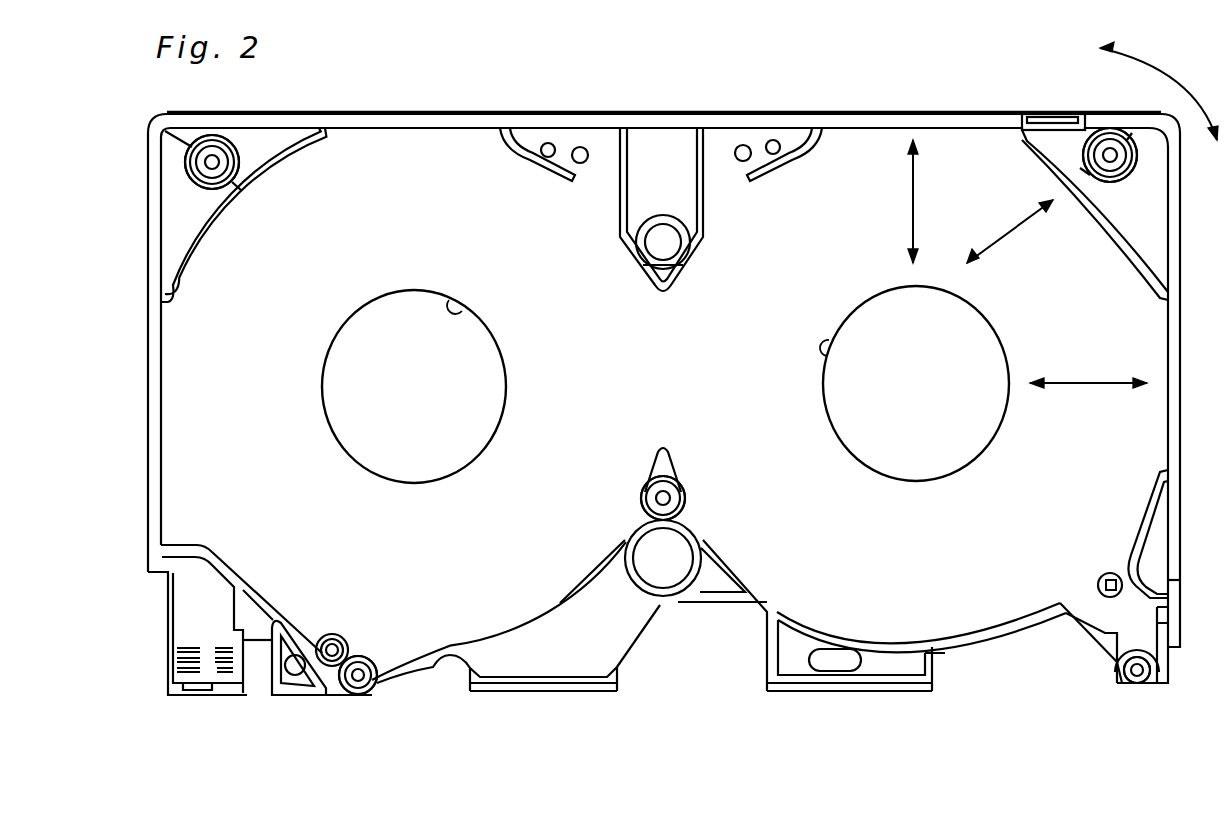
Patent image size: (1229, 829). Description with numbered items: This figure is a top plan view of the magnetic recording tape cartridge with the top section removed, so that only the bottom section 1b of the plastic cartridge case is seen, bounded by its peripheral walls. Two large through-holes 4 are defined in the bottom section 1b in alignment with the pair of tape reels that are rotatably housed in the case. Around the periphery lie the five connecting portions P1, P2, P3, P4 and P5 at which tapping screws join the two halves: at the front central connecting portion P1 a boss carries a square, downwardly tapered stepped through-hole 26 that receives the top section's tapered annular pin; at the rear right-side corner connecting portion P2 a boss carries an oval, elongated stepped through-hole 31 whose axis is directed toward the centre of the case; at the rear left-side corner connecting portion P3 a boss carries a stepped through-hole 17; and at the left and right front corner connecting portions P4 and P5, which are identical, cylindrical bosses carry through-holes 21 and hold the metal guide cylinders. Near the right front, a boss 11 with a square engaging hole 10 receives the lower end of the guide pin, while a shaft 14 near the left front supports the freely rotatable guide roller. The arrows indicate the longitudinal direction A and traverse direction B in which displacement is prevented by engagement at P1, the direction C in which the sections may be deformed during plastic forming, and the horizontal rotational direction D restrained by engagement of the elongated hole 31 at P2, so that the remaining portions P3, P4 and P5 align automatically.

The bottom section 1b is at (936, 128).
The through-holes 4 is at (457, 306).
The engaging hole 10 is at (1100, 580).
The boss 11 is at (1111, 577).
The shaft 14 is at (340, 640).
The stepped through-hole 17 is at (218, 170).
The through-hole 21 is at (362, 682).
The stepped through-hole 26 is at (652, 485).
The stepped through-hole 31 is at (1112, 145).
The connecting portion P1 is at (686, 496).
The connecting portion P2 is at (1140, 174).
The connecting portion P3 is at (226, 138).
The connecting portion P4 is at (351, 700).
The connecting portion P5 is at (1150, 690).
The longitudinal direction A is at (1088, 367).
The traverse direction B is at (900, 201).
The direction C is at (1010, 231).
The horizontal direction D is at (1159, 90).